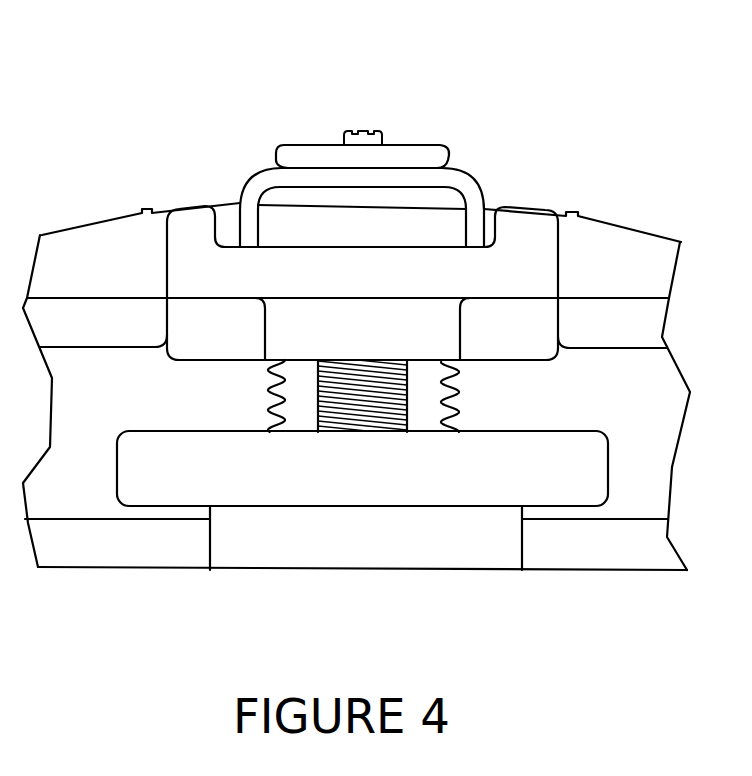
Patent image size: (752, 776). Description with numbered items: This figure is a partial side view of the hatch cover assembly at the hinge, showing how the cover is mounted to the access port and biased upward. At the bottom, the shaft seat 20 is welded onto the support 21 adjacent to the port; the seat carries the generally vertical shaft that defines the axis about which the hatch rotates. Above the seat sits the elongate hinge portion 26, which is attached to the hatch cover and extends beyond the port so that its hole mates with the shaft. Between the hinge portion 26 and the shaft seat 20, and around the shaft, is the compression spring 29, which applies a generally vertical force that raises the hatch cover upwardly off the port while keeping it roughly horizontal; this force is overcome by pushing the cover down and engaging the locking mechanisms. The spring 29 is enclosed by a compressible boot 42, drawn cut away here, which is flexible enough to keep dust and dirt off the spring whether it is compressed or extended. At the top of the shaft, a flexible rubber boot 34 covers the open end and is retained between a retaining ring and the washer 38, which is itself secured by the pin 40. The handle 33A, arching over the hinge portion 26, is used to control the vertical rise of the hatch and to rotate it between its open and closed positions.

The shaft seat 20 is at (383, 477).
The support 21 is at (381, 551).
The hinge portion 26 is at (536, 235).
The compression spring 29 is at (317, 398).
The handle 33A is at (252, 182).
The boot 34 is at (448, 157).
The washer 38 is at (383, 140).
The pin 40 is at (362, 130).
The boot 42 is at (458, 405).